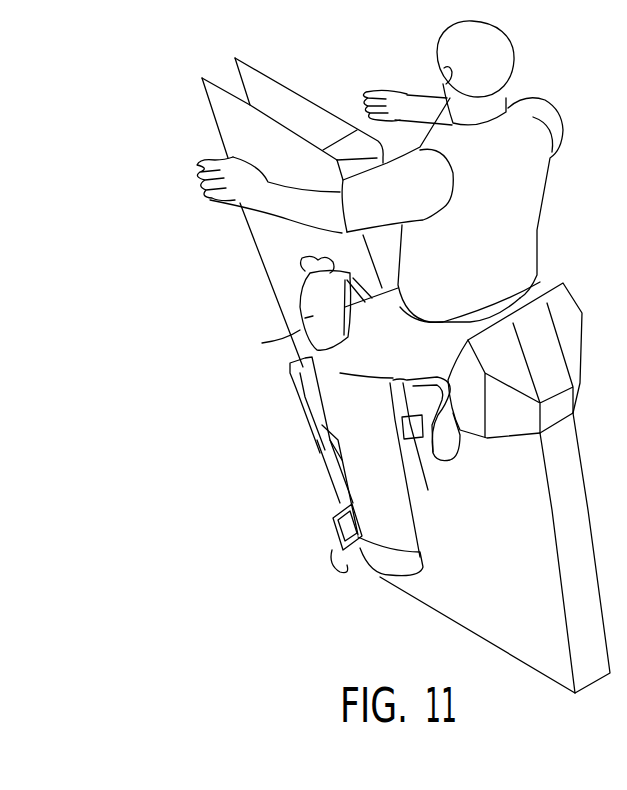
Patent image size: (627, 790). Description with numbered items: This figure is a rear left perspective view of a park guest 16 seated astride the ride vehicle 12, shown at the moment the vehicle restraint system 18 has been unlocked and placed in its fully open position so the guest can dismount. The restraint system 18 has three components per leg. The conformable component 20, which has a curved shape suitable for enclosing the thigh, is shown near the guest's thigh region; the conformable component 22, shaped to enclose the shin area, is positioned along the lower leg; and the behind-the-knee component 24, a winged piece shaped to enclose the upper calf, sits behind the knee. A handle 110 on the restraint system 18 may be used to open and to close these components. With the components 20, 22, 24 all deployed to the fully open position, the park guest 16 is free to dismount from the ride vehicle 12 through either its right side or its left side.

The ride vehicle 12 is at (518, 616).
The park guest 16 is at (527, 110).
The restraint system 18 is at (464, 466).
The conformable component 20 is at (312, 318).
The conformable component 22 is at (305, 424).
The behind-the-knee component 24 is at (432, 505).
The handle 110 is at (307, 271).